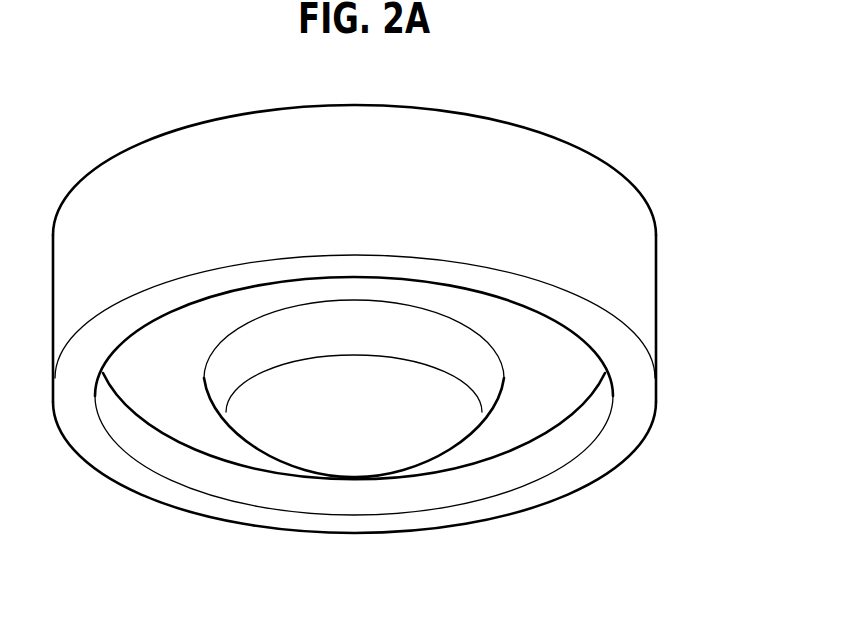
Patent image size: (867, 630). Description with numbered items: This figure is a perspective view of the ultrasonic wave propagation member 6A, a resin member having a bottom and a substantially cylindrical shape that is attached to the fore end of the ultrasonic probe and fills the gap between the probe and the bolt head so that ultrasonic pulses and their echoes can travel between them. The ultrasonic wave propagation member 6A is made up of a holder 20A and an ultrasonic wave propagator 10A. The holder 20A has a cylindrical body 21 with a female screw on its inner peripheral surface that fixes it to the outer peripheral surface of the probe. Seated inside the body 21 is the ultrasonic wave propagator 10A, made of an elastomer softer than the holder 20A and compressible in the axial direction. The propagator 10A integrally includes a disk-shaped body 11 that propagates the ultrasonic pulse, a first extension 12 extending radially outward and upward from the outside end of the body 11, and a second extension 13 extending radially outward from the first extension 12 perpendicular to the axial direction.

The ultrasonic wave propagation member 6A is at (572, 117).
The holder 20A is at (600, 213).
The body 21 is at (403, 346).
The ultrasonic wave propagator 10A is at (600, 580).
The body 11 is at (362, 435).
The first extension 12 is at (486, 382).
The second extension 13 is at (546, 385).